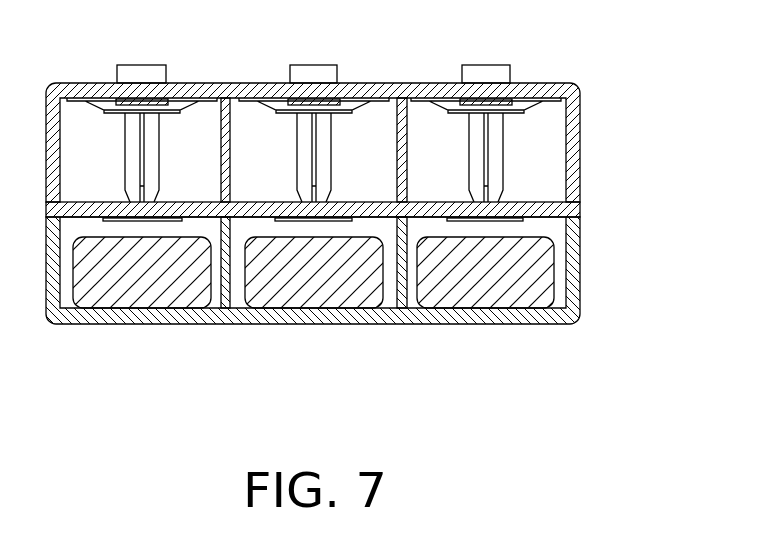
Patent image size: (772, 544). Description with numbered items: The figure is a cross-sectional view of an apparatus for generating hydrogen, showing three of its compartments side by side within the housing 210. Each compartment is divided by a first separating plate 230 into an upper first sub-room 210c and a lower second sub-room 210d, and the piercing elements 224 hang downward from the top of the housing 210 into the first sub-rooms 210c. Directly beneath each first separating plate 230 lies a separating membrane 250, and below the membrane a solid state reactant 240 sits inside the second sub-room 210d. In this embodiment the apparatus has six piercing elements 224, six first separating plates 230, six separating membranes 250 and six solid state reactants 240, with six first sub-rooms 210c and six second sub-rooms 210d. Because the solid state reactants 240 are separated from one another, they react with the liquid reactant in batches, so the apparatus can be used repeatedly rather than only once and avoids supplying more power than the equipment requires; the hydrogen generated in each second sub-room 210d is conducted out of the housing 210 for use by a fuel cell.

The housing 210 is at (130, 315).
The first sub-room 210c is at (408, 150).
The second sub-room 210d is at (408, 268).
The piercing element 224 is at (497, 175).
The first separating plate 230 is at (547, 210).
The solid state reactant 240 is at (506, 296).
The separating membrane 250 is at (487, 220).